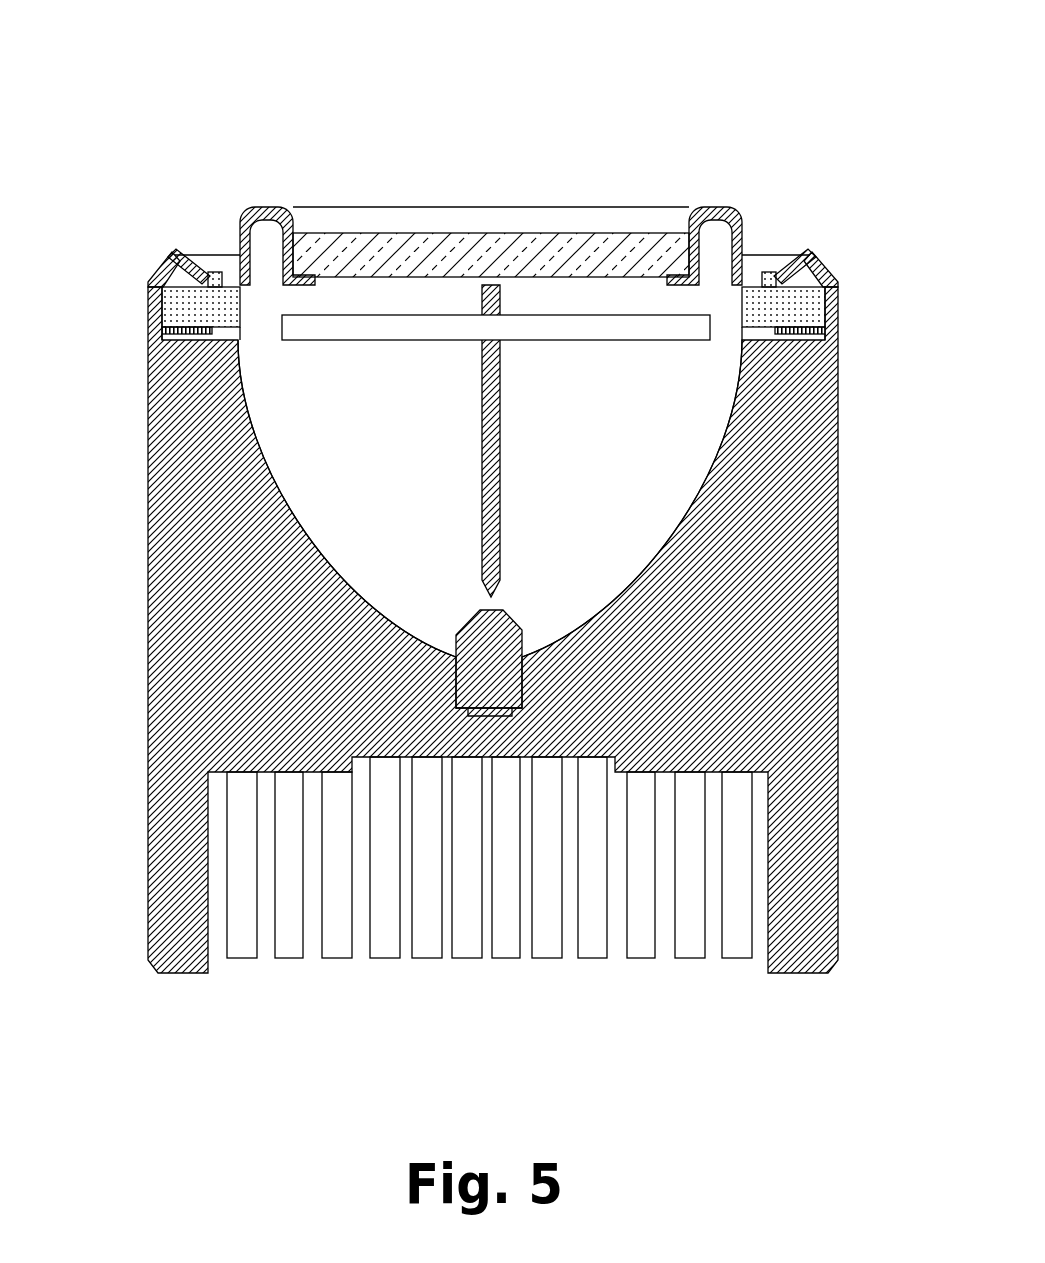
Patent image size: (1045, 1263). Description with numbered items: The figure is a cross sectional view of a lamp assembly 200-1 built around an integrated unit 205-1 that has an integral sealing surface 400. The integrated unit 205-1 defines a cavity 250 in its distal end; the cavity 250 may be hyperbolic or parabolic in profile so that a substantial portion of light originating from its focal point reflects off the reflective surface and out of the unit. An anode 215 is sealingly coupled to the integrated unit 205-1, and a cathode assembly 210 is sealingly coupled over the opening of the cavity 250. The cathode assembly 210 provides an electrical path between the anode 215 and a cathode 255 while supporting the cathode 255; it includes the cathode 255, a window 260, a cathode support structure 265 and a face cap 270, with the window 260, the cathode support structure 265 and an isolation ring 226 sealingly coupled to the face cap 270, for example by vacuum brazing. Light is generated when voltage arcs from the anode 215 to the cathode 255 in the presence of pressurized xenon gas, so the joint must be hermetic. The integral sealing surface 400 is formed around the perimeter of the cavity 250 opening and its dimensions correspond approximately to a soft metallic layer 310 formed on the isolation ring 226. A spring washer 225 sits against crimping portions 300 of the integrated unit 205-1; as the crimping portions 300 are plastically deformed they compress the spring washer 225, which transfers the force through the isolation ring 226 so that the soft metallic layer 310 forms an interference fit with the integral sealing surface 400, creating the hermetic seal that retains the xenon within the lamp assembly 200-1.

The lamp assembly 200-1 is at (278, 67).
The integrated unit 205-1 is at (147, 407).
The cathode assembly 210 is at (752, 168).
The anode 215 is at (487, 716).
The spring washer 225 is at (199, 262).
The isolation ring 226 is at (152, 307).
The cavity 250 is at (268, 474).
The cathode 255 is at (482, 480).
The window 260 is at (612, 240).
The cathode support structure 265 is at (382, 315).
The face cap 270 is at (267, 207).
The crimping portions 300 is at (820, 275).
The soft metallic layer 310 is at (805, 330).
The integral sealing surface 400 is at (797, 333).